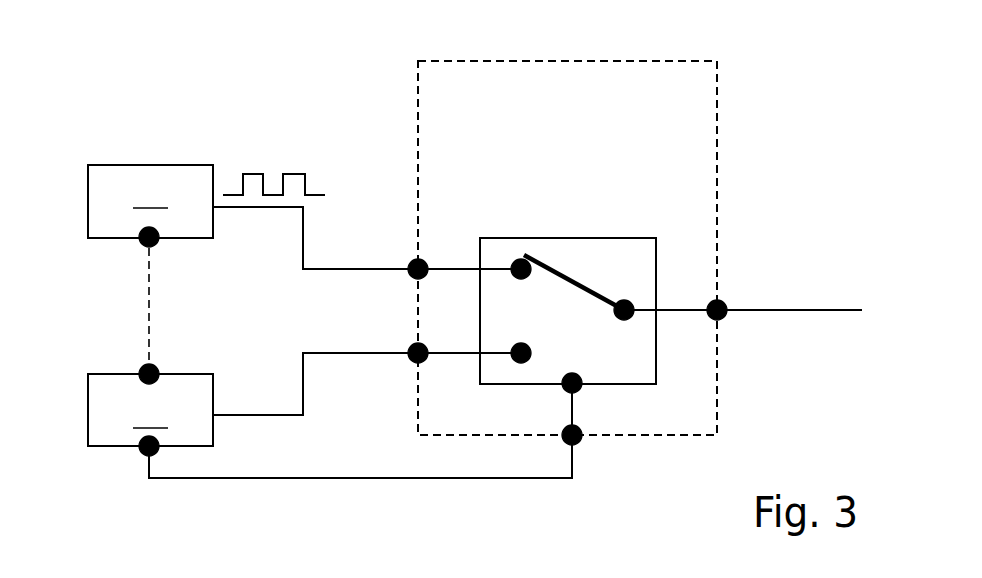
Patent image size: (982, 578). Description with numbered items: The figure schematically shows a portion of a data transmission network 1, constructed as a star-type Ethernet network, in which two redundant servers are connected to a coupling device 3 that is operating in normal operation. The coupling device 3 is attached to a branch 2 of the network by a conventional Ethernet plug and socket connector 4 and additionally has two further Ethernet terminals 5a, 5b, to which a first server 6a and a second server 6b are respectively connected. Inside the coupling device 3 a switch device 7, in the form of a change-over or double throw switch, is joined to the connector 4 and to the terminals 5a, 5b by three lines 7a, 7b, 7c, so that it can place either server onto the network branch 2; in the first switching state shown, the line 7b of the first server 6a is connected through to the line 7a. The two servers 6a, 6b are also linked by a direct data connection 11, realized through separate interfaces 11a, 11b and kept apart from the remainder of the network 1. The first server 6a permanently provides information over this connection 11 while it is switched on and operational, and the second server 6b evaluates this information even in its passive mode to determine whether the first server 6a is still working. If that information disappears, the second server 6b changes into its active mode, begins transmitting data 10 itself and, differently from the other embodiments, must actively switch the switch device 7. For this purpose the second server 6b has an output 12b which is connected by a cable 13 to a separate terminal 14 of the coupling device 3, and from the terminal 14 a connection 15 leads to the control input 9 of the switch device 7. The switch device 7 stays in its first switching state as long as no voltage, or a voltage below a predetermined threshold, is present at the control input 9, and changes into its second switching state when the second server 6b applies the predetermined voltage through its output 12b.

The data transmission network 1 is at (212, 86).
The branch 2 is at (830, 310).
The coupling device 3 is at (725, 72).
The Ethernet plug and socket connector 4 is at (723, 298).
The terminal 5a is at (416, 260).
The terminal 5b is at (411, 362).
The first server 6a is at (150, 201).
The second server 6b is at (150, 410).
The switch device 7 is at (611, 293).
The line 7a is at (680, 312).
The line 7b is at (443, 270).
The line 7c is at (447, 355).
The control input 9 is at (582, 387).
The data 10 is at (273, 172).
The direct data connection 11 is at (142, 319).
The interface 11a is at (158, 243).
The interface 11b is at (160, 370).
The output 12b is at (140, 455).
The return line 13 is at (263, 478).
The terminal 14 is at (577, 443).
The connecting line 15 is at (567, 405).